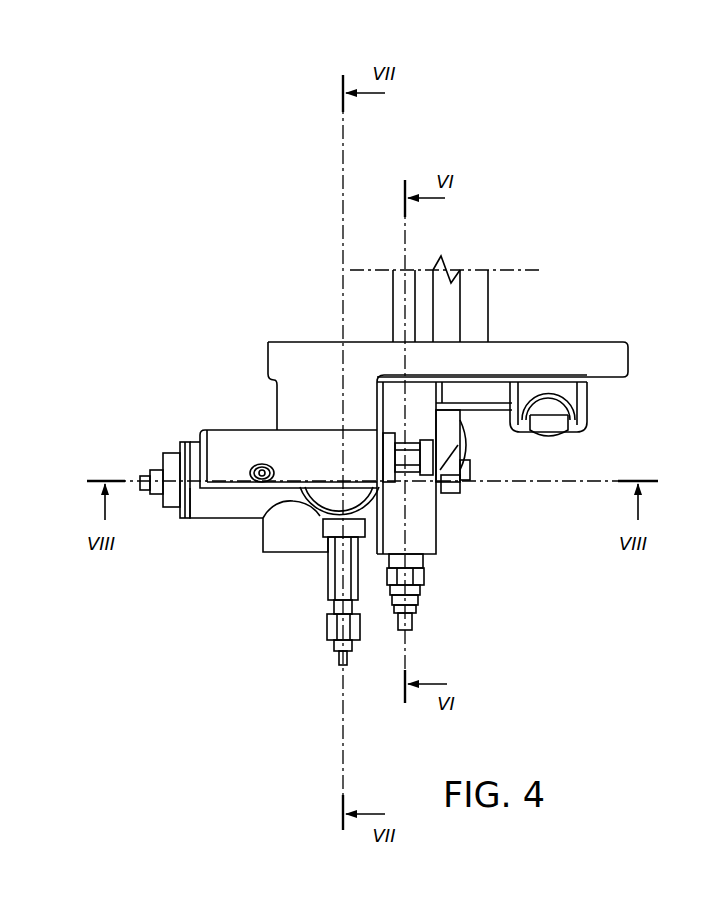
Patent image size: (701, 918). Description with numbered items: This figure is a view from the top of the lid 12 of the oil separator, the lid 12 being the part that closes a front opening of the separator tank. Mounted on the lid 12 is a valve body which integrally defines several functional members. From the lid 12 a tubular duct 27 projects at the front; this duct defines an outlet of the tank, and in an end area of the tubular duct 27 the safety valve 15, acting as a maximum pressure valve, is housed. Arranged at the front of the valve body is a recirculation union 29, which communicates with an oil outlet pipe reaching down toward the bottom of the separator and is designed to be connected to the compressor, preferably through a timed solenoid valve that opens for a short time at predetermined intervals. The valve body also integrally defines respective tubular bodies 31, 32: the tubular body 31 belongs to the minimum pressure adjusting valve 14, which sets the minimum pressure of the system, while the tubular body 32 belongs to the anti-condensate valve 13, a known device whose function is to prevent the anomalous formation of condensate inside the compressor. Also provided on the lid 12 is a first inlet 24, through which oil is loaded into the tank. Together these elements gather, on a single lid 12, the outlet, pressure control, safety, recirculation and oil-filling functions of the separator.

The lid 12 is at (605, 337).
The anti-condensate valve 13 is at (199, 428).
The minimum pressure adjusting valve 14 is at (184, 522).
The safety valve 15 is at (429, 588).
The first inlet 24 is at (581, 397).
The tubular duct 27 is at (430, 510).
The recirculation union 29 is at (328, 627).
The tubular body of the minimum pressure valve 31 is at (227, 508).
The tubular body of the anti-condensate valve 32 is at (240, 433).